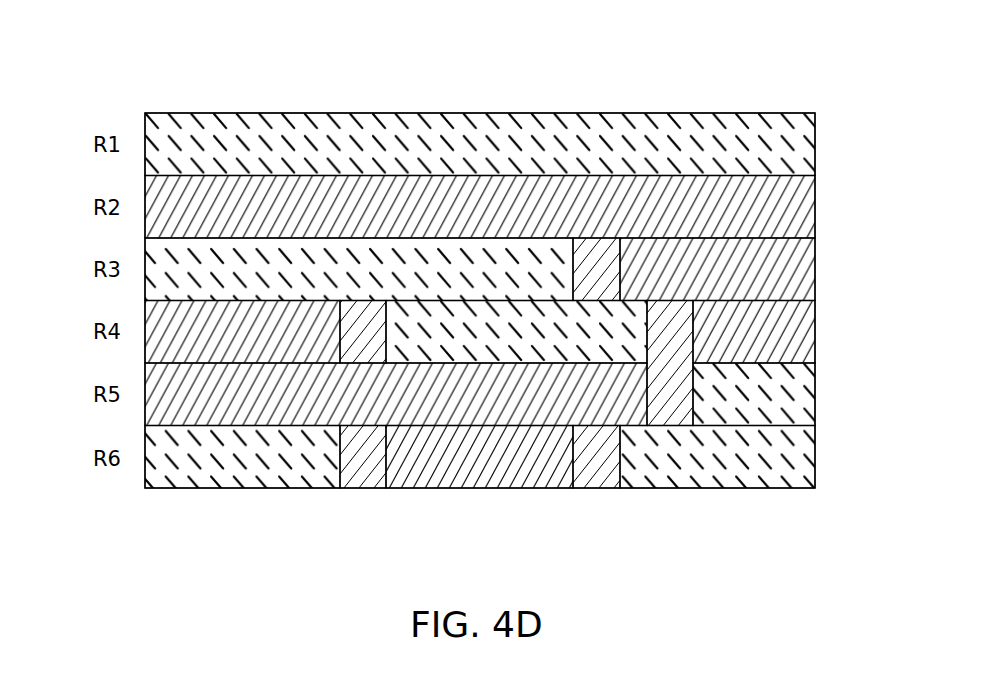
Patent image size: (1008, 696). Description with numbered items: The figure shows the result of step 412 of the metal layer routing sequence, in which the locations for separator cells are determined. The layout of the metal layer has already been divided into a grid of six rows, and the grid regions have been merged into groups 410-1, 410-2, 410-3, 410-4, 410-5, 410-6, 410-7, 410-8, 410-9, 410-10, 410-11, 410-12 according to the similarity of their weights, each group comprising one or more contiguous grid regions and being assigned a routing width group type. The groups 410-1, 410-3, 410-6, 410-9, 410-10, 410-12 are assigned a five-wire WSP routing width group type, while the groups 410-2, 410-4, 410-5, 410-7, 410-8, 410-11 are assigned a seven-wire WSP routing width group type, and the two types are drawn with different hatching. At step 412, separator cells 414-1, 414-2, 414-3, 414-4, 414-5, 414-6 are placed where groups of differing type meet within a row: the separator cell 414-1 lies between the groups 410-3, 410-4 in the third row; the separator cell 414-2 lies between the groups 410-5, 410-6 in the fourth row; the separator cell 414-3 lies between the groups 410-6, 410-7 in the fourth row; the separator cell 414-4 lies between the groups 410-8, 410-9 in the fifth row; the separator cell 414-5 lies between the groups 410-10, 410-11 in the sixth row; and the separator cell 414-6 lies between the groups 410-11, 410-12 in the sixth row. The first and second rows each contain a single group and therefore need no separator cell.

The step of determining separator cell locations 412 is at (121, 60).
The group 410-1 is at (808, 133).
The group 410-2 is at (808, 198).
The group 410-3 is at (153, 256).
The group 410-4 is at (808, 263).
The group 410-5 is at (165, 348).
The group 410-6 is at (456, 340).
The group 410-7 is at (808, 324).
The group 410-8 is at (165, 410).
The group 410-9 is at (808, 383).
The group 410-10 is at (200, 478).
The group 410-11 is at (487, 470).
The group 410-12 is at (808, 453).
The separator cell 414-1 is at (583, 262).
The separator cell 414-2 is at (360, 318).
The separator cell 414-3 is at (680, 347).
The separator cell 414-4 is at (660, 388).
The separator cell 414-5 is at (352, 478).
The separator cell 414-6 is at (600, 478).